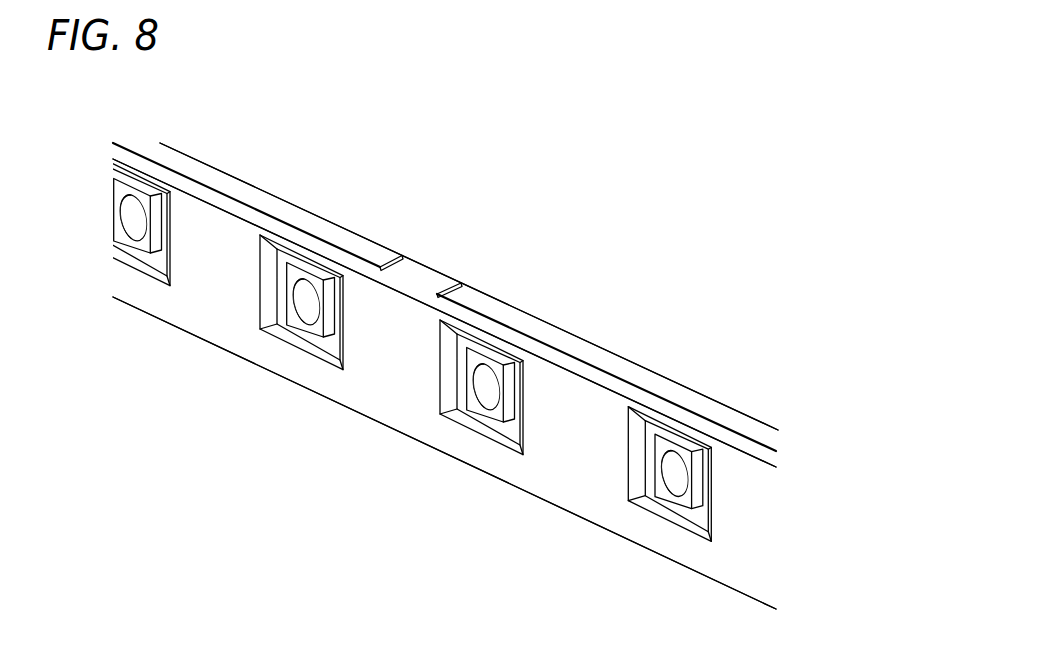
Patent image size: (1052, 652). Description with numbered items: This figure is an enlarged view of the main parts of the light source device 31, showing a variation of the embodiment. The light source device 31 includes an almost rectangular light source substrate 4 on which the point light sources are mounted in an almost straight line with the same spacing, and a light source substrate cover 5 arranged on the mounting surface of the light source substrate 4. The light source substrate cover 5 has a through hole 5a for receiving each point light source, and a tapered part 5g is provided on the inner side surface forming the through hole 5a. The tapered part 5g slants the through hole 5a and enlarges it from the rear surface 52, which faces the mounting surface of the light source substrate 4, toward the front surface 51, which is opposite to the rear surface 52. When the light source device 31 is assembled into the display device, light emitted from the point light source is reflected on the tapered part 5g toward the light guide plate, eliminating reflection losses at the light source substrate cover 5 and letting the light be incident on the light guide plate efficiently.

The light source device 31 is at (450, 493).
The front surface 51 is at (387, 390).
The rear surface 52 is at (613, 373).
The light source substrate 4 is at (513, 326).
The light source substrate cover 5 is at (399, 327).
The through hole 5a is at (327, 283).
The tapered part 5g is at (267, 277).